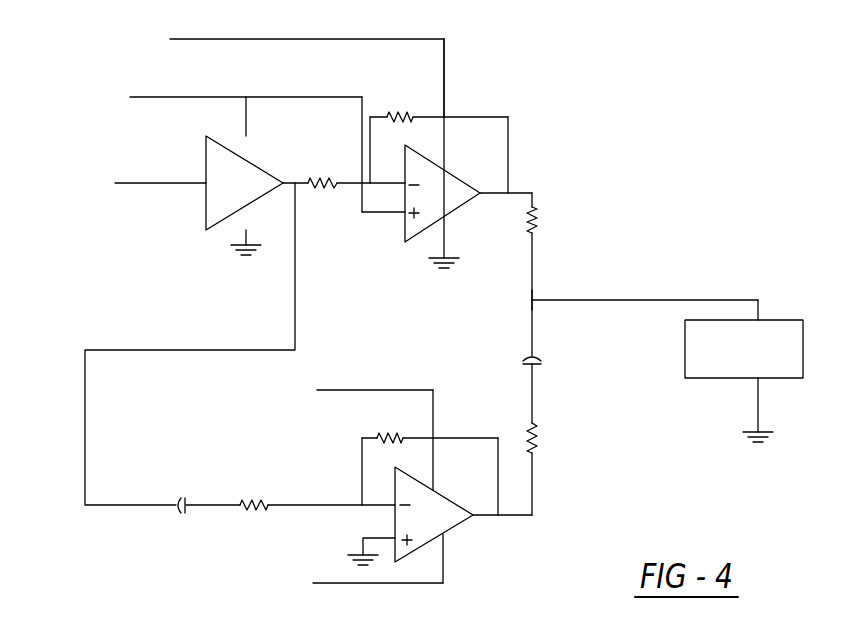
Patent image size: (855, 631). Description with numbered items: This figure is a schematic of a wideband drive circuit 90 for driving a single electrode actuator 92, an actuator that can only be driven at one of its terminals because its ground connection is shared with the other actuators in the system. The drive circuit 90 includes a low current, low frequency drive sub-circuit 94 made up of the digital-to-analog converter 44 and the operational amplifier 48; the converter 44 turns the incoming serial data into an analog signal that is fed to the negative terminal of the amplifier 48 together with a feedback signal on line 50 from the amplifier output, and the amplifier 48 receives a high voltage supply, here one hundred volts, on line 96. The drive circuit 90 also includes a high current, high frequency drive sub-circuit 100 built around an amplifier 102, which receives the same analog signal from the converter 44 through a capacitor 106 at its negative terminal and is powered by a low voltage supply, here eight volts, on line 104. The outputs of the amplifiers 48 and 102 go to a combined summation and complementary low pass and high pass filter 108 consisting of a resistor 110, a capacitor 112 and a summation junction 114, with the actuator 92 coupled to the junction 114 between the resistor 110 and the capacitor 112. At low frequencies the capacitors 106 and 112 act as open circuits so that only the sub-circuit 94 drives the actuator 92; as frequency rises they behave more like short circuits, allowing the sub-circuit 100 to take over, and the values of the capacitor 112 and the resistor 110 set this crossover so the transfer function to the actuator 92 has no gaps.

The digital-to-analog converter 44 is at (205, 209).
The operational amplifier 48 is at (405, 223).
The feedback line 50 is at (493, 116).
The wideband drive circuit 90 is at (648, 131).
The single electrode actuator 92 is at (782, 319).
The low current, low frequency drive sub-circuit 94 is at (474, 87).
The high voltage supply line 96 is at (298, 41).
The high current, high frequency drive sub-circuit 100 is at (543, 519).
The amplifier 102 is at (462, 522).
The low voltage supply line 104 is at (399, 388).
The capacitor 106 is at (179, 513).
The combined summation and complementary low pass and high pass filter 108 is at (599, 269).
The resistor 110 is at (527, 228).
The capacitor 112 is at (540, 366).
The summation junction 114 is at (531, 300).